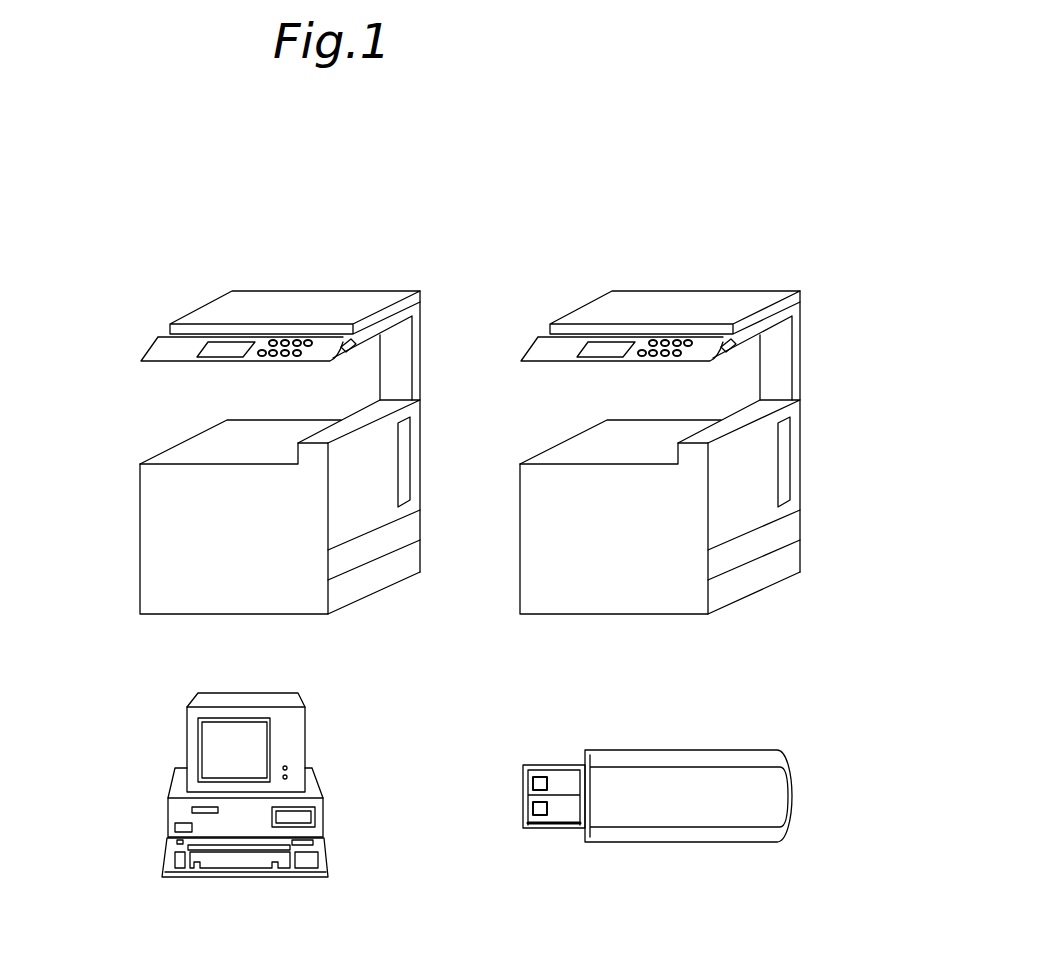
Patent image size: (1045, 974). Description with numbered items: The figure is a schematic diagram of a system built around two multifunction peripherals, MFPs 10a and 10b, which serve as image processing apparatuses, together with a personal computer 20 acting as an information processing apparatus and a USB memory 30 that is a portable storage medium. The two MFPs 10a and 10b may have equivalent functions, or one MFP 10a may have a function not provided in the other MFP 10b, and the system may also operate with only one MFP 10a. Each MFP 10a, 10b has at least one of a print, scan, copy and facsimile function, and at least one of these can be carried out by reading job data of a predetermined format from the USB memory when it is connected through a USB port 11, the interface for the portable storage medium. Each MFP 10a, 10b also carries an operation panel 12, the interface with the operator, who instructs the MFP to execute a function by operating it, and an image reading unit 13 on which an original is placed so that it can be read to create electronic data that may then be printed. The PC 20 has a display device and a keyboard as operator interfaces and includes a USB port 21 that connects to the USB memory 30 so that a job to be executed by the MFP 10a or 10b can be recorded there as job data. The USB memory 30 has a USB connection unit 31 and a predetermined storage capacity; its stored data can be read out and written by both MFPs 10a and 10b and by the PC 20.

The multifunction peripheral 10a is at (185, 305).
The multifunction peripheral 10b is at (845, 340).
The USB port 11 is at (728, 343).
The operation panel 12 is at (160, 342).
The image reading unit 13 is at (272, 308).
The personal computer 20 is at (200, 812).
The USB port 21 is at (187, 822).
The USB memory 30 is at (677, 796).
The USB connection unit 31 is at (560, 807).